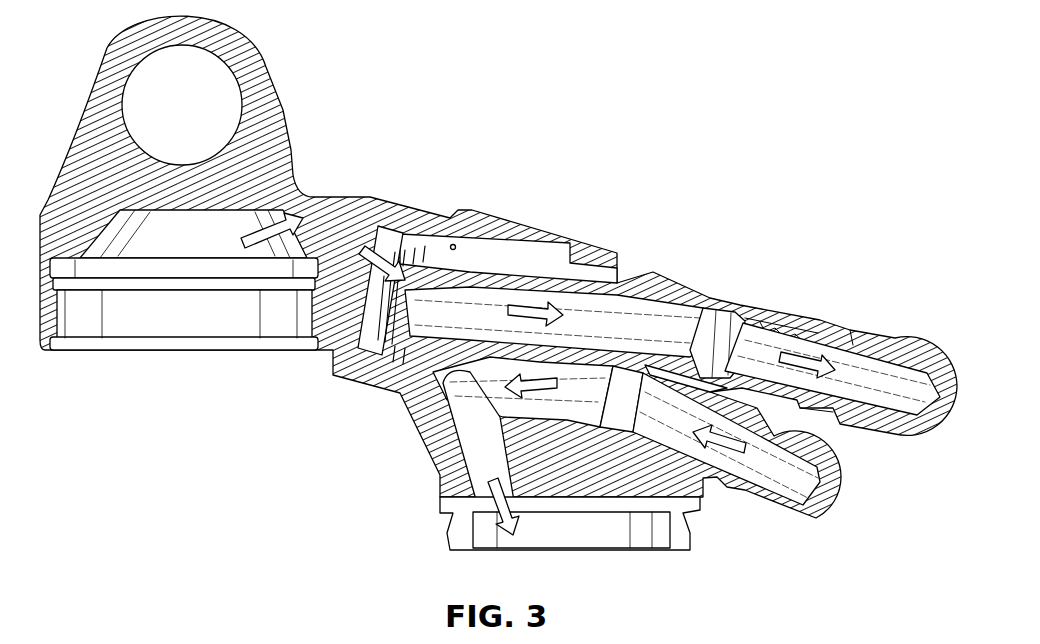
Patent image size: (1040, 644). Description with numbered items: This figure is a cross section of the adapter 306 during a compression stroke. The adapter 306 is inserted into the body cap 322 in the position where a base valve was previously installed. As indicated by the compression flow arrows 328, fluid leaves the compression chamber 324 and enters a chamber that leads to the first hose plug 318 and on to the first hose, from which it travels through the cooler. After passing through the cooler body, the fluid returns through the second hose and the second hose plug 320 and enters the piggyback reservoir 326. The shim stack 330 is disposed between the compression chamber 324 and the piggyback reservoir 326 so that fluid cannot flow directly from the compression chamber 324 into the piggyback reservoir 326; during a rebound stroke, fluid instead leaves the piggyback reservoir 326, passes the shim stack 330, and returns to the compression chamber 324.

The adapter 306 is at (677, 290).
The first hose plug 318 is at (890, 382).
The second hose plug 320 is at (780, 492).
The body cap 322 is at (263, 155).
The compression chamber 324 is at (160, 230).
The piggyback reservoir 326 is at (547, 528).
The compression flow arrows 328 is at (550, 282).
The shim stack 330 is at (413, 250).